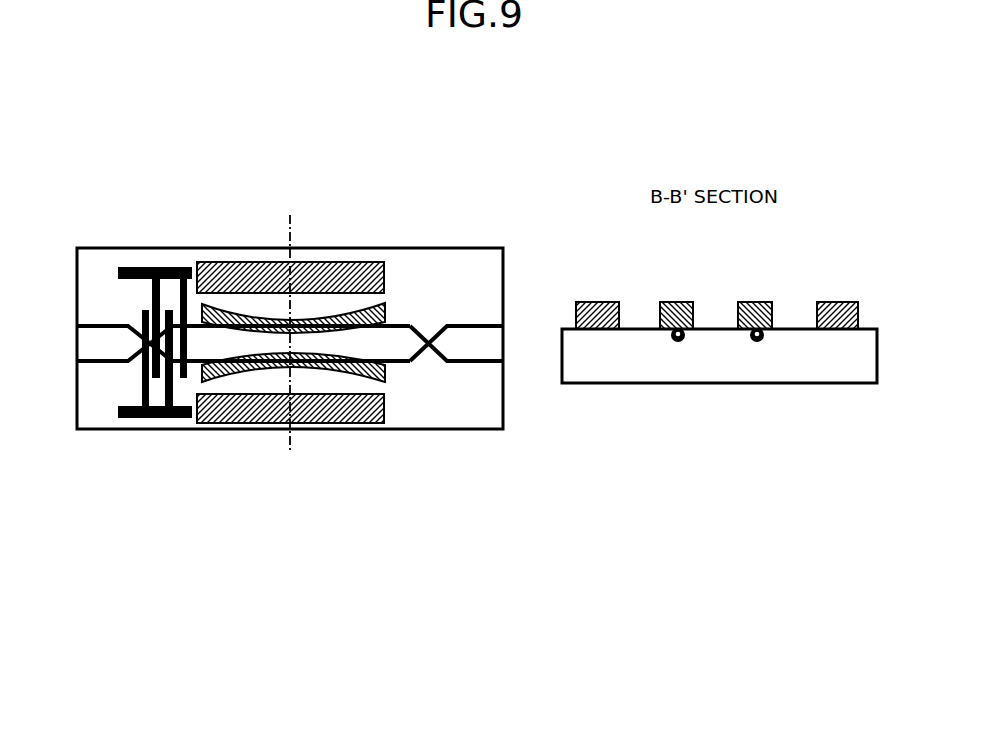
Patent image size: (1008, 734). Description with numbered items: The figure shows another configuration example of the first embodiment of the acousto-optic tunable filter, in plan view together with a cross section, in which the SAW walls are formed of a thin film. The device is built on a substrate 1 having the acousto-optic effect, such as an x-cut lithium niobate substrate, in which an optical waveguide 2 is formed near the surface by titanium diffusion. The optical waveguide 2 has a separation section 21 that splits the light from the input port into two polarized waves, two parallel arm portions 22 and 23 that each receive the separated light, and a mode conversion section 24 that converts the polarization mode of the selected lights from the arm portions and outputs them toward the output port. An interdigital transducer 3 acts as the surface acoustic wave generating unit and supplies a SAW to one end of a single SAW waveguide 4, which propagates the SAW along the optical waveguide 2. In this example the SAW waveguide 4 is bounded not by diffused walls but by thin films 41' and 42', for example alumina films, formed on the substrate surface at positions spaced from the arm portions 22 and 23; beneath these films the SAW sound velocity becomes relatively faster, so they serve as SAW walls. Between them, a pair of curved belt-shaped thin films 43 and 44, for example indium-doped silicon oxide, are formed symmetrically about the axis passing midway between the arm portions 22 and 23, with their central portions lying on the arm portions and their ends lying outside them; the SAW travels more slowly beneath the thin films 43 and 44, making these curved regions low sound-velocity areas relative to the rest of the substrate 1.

The substrate 1 is at (474, 431).
The optical waveguide 2 is at (100, 294).
The interdigital transducer 3 is at (140, 424).
The SAW waveguide 4 is at (256, 214).
The separation section 21 is at (152, 338).
The arm portion 22 is at (399, 325).
The arm portion 23 is at (399, 363).
The mode conversion section 24 is at (436, 327).
The thin film 41' is at (408, 253).
The thin film 42' is at (538, 373).
The thin film 43 is at (350, 306).
The thin film 44 is at (350, 379).